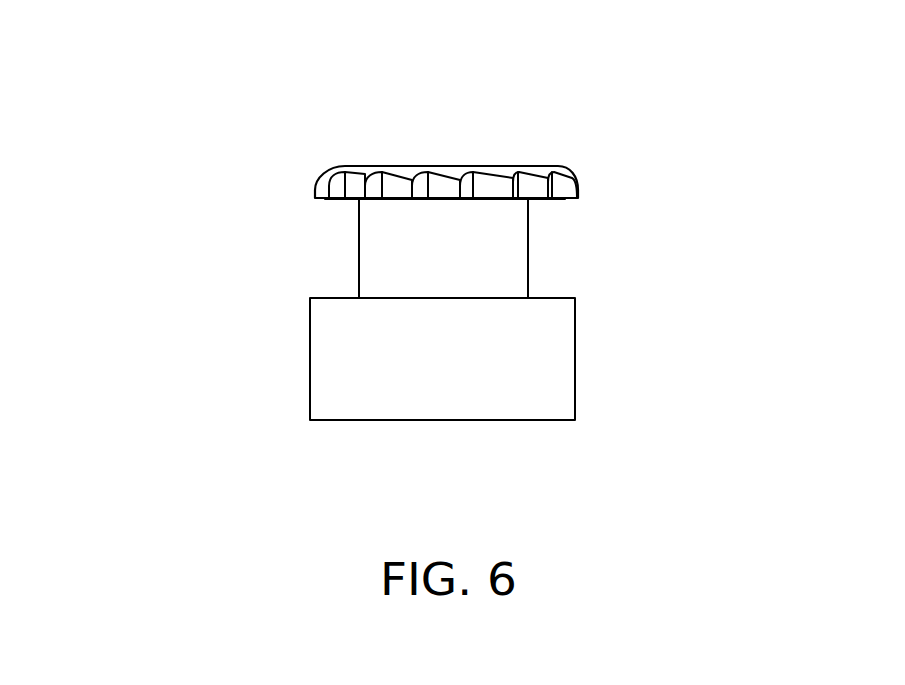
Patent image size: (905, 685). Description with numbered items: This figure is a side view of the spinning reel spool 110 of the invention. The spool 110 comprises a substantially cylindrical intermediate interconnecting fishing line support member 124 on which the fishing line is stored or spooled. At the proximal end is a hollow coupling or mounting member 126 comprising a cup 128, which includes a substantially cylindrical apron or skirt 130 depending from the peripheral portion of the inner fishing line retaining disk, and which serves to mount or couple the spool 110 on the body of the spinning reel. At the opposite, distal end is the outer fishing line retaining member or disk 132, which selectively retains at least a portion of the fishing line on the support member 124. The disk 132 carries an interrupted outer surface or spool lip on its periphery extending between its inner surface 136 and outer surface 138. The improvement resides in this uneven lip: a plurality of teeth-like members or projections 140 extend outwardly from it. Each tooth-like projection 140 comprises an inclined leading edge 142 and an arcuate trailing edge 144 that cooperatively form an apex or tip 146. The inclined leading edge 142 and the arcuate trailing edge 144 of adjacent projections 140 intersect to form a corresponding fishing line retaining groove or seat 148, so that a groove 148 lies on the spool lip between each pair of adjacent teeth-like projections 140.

The spinning reel spool 110 is at (424, 251).
The intermediate interconnecting fishing line support member 124 is at (357, 251).
The inner hollow coupling or mounting member 126 is at (623, 423).
The cup 128 is at (540, 297).
The apron or skirt 130 is at (310, 377).
The outer fishing line retaining member or disk 132 is at (424, 217).
The inner surface 136 is at (553, 195).
The outer surface 138 is at (460, 167).
The tooth-like member or projection 140 is at (262, 178).
The inclined leading edge 142 is at (470, 188).
The arcuate trailing edge 144 is at (533, 190).
The apex or tip 146 is at (568, 197).
The fishing line retaining groove or seat 148 is at (523, 198).